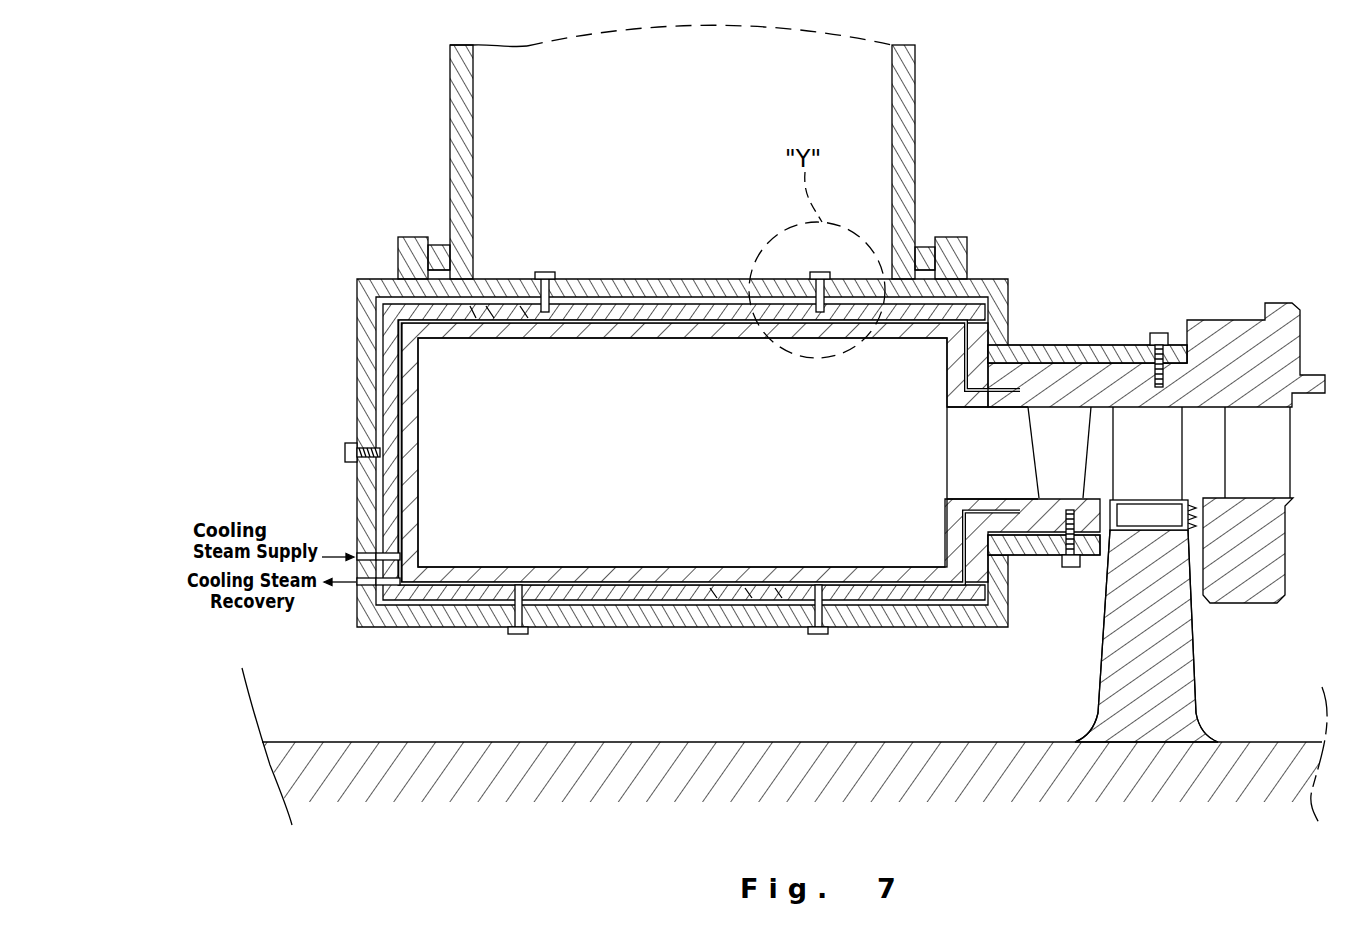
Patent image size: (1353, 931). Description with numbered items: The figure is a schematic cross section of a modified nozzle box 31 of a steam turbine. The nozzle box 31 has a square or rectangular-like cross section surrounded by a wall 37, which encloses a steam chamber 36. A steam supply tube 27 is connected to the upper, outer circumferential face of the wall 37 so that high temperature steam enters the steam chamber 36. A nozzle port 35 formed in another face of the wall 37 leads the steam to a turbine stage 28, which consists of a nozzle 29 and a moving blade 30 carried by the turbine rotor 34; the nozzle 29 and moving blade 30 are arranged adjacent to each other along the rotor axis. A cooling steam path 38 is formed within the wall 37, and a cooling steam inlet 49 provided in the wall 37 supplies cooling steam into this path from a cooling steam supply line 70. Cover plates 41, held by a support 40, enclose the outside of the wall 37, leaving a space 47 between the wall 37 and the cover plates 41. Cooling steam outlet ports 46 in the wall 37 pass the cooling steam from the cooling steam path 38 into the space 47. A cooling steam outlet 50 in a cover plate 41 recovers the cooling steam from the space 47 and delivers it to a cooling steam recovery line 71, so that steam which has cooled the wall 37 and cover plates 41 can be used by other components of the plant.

The steam supply tube 27 is at (450, 118).
The turbine stage 28 is at (1156, 478).
The nozzle 29 is at (1054, 440).
The moving blade 30 is at (1146, 440).
The nozzle box 31 is at (680, 454).
The turbine rotor 34 is at (867, 788).
The nozzle port 35 is at (960, 455).
The steam chamber 36 is at (672, 467).
The wall 37 is at (733, 310).
The cooling steam path 38 is at (858, 615).
The support 40 is at (545, 272).
The cover plate 41 is at (662, 302).
The cooling steam outlet port 46 is at (493, 323).
The space 47 is at (605, 310).
The cooling steam inlet 49 is at (353, 553).
The cooling steam outlet 50 is at (358, 587).
The cooling steam supply line 70 is at (350, 555).
The cooling steam recovery line 71 is at (332, 588).